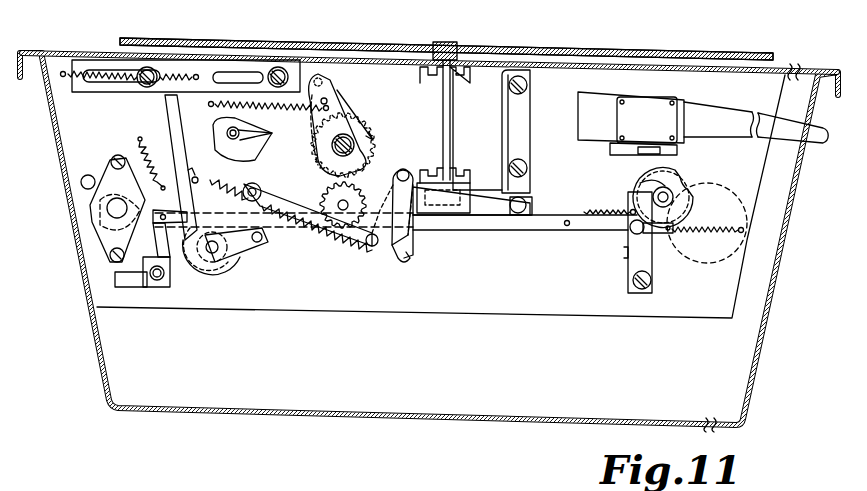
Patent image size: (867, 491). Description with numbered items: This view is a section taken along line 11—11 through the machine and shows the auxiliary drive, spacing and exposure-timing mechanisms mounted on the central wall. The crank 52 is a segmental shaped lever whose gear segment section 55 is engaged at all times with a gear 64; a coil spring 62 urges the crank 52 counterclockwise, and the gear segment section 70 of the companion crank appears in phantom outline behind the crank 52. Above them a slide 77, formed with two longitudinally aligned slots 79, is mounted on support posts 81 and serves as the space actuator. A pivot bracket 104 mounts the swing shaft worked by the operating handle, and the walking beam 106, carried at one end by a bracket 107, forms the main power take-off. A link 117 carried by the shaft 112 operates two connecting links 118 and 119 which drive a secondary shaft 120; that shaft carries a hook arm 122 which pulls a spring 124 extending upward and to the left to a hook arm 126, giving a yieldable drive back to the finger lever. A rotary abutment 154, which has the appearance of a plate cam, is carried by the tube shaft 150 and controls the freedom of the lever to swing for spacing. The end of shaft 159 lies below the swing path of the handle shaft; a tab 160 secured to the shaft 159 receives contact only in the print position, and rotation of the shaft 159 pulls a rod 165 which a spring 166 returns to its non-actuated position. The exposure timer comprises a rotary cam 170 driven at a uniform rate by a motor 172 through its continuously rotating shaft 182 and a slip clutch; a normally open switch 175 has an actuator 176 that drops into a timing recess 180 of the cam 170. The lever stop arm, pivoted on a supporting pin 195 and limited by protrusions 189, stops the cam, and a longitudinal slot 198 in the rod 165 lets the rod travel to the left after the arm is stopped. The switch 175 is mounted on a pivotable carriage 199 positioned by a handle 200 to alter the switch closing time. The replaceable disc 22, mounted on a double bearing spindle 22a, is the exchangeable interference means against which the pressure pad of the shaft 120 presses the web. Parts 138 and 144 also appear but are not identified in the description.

The section line 11 is at (82, 48).
The replaceable disc 22 is at (700, 53).
The spindle 22a is at (449, 112).
The crank 52 is at (353, 125).
The gear segment section 55 is at (377, 142).
The coil spring 62 is at (268, 106).
The gear 64 is at (320, 190).
The gear segment section 70 is at (338, 92).
The slide 77 is at (137, 87).
The longitudinally aligned slots 79 is at (243, 78).
The support posts 81 is at (300, 60).
The pivot bracket 104 is at (112, 160).
The walking beam 106 is at (478, 190).
The bracket 107 is at (525, 152).
The shaft 112 is at (212, 250).
The link 117 is at (258, 182).
The connecting link 118 is at (305, 235).
The connecting link 119 is at (395, 188).
The secondary shaft 120 is at (405, 170).
The hook arm 122 is at (413, 243).
The spring 124 is at (360, 262).
The hook arm 126 is at (197, 165).
The spring 138 is at (149, 154).
The pivot 144 is at (233, 140).
The tube shaft 150 is at (273, 139).
The rotary abutment 154 is at (225, 128).
The shaft 159 is at (157, 288).
The tab 160 is at (130, 287).
The rod 165 is at (545, 228).
The spring 166 is at (615, 210).
The rotary cam 170 is at (690, 214).
The motor 172 is at (715, 272).
The switch 175 is at (647, 120).
The switch actuator 176 is at (683, 162).
The timing recess 180 is at (685, 185).
The motor shaft 182 is at (655, 185).
The protrusions 189 is at (625, 255).
The supporting pin 195 is at (630, 233).
The longitudinal slot 198 is at (658, 236).
The pivotable carriage 199 is at (582, 120).
The handle 200 is at (822, 140).